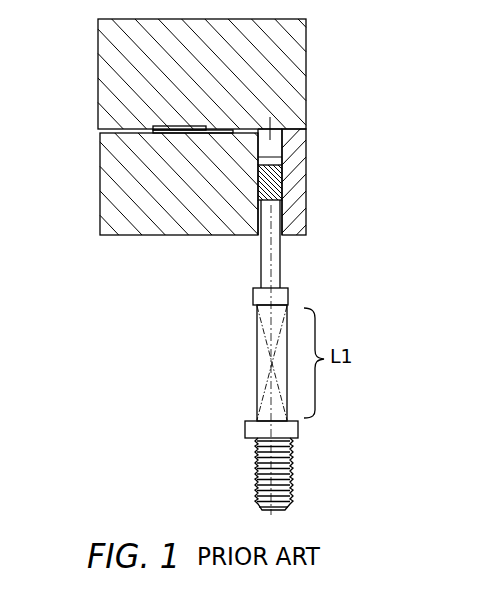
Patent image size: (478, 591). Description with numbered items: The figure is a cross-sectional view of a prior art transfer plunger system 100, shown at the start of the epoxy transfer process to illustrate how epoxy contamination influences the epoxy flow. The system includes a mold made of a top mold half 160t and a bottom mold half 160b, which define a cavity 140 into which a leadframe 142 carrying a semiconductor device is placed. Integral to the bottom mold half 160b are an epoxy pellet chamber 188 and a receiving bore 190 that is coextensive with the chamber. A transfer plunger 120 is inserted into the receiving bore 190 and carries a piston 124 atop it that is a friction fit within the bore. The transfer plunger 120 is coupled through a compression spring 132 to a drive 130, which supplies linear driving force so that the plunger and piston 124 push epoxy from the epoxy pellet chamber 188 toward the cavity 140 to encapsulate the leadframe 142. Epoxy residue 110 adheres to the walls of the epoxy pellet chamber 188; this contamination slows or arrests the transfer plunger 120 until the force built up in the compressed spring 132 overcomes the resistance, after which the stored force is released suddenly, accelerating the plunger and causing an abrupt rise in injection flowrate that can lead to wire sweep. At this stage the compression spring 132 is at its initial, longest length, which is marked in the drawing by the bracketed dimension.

The prior art transfer plunger system 100 is at (168, 300).
The epoxy residue 110 is at (276, 139).
The transfer plunger 120 is at (281, 272).
The piston 124 is at (284, 185).
The drive 130 is at (291, 476).
The compression spring 132 is at (263, 363).
The cavity 140 is at (160, 125).
The leadframe 142 is at (173, 134).
The top mold half 160t is at (168, 74).
The bottom mold half 160b is at (100, 200).
The epoxy pellet chamber 188 is at (273, 135).
The receiving bore 190 is at (284, 212).